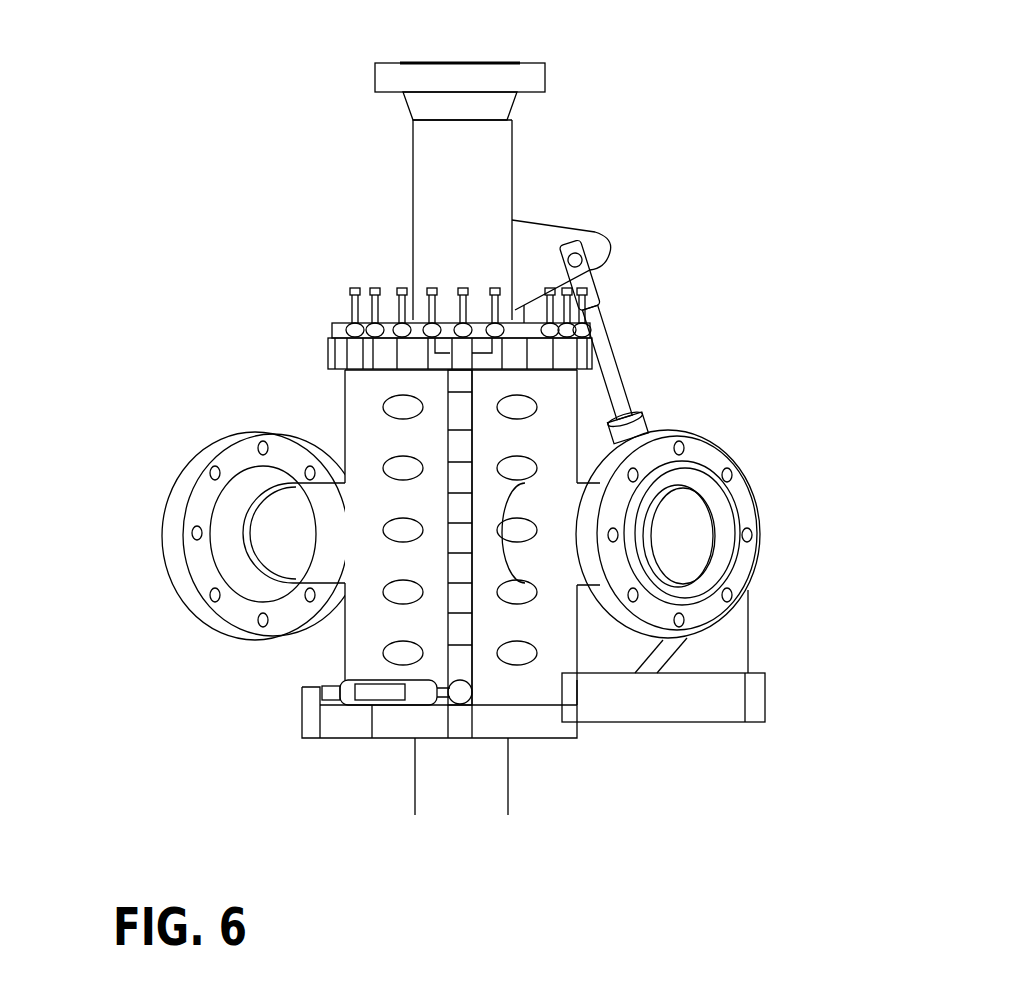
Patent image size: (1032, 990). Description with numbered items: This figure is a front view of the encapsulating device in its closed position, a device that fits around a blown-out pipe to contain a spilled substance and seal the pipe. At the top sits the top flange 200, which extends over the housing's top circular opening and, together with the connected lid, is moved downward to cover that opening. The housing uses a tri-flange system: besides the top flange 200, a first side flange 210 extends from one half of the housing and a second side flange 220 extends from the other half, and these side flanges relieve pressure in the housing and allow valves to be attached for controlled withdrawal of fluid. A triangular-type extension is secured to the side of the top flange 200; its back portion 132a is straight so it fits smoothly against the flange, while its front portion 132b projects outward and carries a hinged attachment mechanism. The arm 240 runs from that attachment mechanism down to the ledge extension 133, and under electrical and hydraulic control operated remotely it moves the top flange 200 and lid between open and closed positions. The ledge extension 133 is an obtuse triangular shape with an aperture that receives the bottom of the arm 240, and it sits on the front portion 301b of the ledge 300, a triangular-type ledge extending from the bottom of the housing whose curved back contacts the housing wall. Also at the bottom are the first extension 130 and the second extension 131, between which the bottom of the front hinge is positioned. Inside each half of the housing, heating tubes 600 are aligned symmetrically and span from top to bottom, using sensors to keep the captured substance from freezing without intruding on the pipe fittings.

The top flange 200 is at (547, 74).
The heating tubes 600 is at (380, 402).
The second side flange 220 is at (160, 532).
The first side flange 210 is at (767, 550).
The back portion 132a is at (530, 244).
The front portion 132b is at (613, 248).
The arm 240 is at (620, 358).
The ledge extension 133 is at (757, 637).
The ledge 300 is at (617, 695).
The front portion 301b is at (770, 702).
The first extension 130 is at (300, 702).
The second extension 131 is at (457, 712).